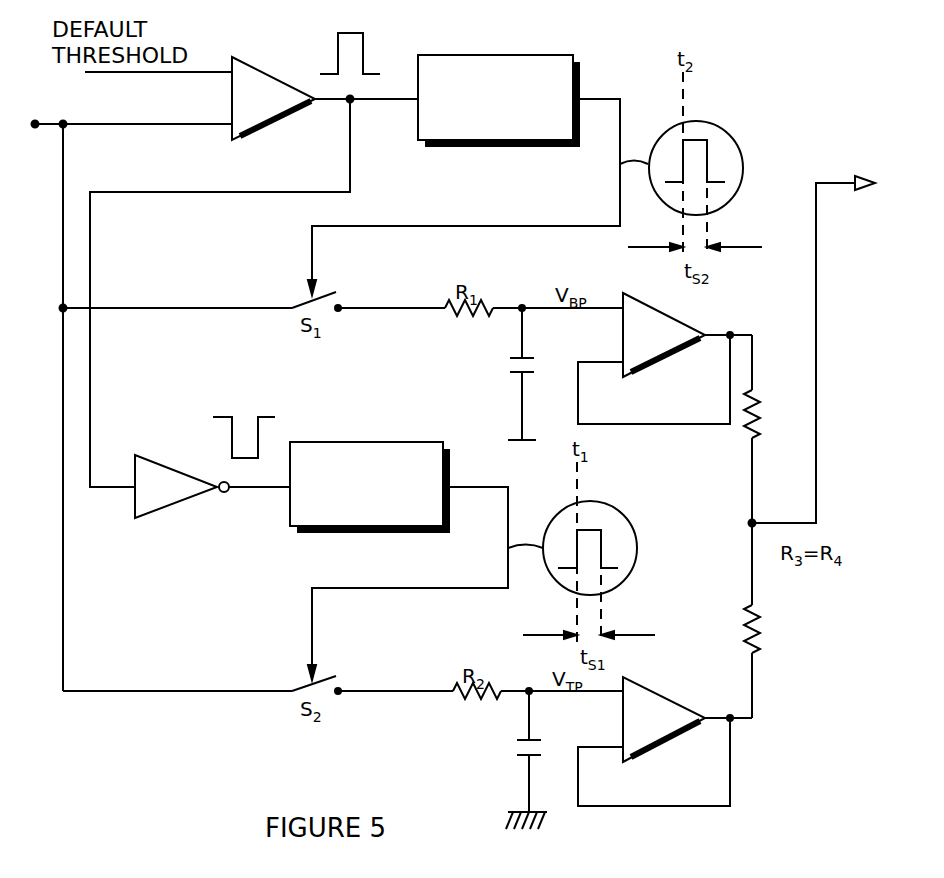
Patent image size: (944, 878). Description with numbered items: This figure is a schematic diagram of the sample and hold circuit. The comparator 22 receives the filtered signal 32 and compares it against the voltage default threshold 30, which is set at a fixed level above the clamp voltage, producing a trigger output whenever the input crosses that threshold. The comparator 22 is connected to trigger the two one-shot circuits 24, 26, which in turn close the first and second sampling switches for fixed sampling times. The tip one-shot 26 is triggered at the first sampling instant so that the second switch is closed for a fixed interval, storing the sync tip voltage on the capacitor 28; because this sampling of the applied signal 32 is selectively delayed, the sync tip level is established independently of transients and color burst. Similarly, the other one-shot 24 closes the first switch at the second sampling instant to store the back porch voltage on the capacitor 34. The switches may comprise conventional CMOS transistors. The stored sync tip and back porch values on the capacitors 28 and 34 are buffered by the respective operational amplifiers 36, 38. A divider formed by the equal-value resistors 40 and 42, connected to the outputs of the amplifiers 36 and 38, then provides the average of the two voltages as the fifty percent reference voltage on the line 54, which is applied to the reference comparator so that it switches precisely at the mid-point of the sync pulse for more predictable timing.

The comparator 22 is at (279, 127).
The one-shot circuit 24 is at (578, 60).
The tip one-shot 26 is at (325, 442).
The capacitor 28 is at (518, 748).
The voltage default threshold 30 is at (212, 71).
The signal 32 is at (58, 122).
The capacitor 34 is at (510, 362).
The operational amplifier 36 is at (660, 692).
The operational amplifier 38 is at (681, 317).
The resistor 40 is at (758, 616).
The resistor 42 is at (752, 440).
The line 54 is at (816, 330).